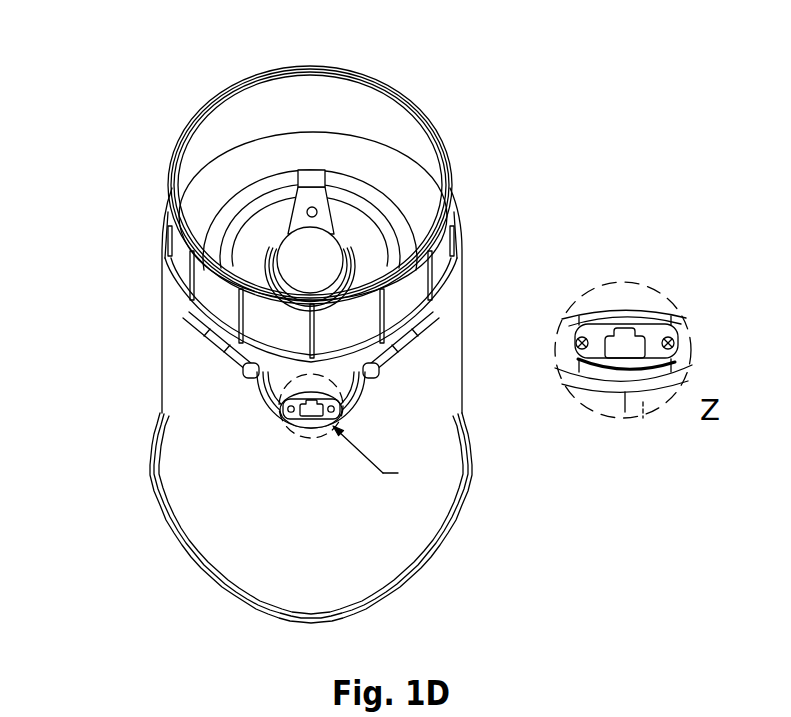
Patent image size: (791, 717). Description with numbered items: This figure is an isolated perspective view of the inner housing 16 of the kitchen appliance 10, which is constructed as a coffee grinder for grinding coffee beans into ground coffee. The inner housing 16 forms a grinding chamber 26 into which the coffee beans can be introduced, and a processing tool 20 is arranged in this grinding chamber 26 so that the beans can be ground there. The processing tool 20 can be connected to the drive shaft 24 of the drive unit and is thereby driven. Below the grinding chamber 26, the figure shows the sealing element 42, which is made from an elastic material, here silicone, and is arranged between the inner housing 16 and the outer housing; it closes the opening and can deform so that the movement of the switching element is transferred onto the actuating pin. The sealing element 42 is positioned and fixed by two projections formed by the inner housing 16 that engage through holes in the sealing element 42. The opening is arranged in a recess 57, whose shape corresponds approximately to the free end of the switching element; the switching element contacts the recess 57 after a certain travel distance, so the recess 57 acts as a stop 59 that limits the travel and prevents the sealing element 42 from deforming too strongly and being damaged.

The kitchen appliance 10 is at (361, 405).
The inner housing 16 is at (641, 400).
The processing tool 20 is at (312, 206).
The drive shaft 24 is at (320, 257).
The grinding chamber 26 is at (216, 194).
The recess 57 is at (309, 404).
The stop 59 is at (262, 400).
The sealing element 42 is at (627, 346).